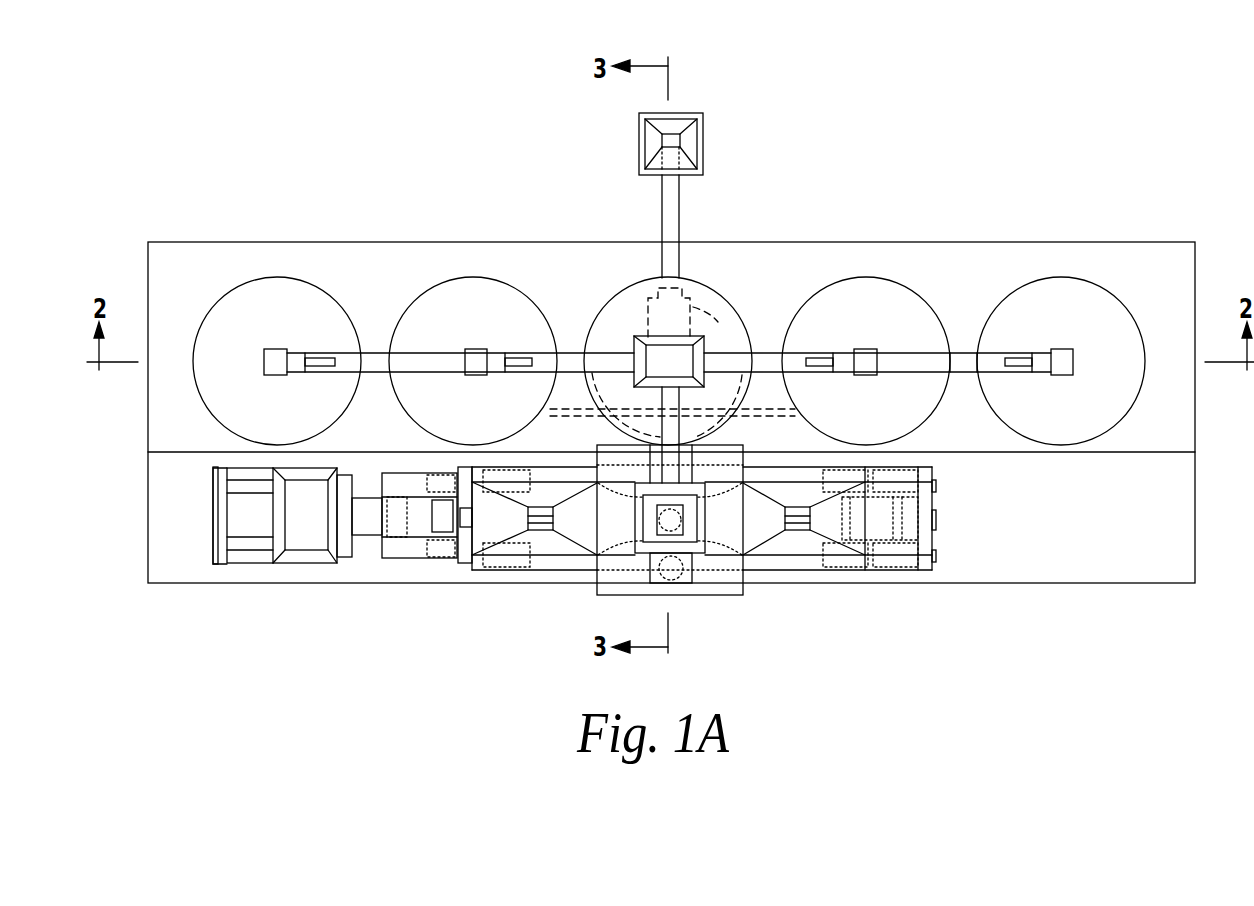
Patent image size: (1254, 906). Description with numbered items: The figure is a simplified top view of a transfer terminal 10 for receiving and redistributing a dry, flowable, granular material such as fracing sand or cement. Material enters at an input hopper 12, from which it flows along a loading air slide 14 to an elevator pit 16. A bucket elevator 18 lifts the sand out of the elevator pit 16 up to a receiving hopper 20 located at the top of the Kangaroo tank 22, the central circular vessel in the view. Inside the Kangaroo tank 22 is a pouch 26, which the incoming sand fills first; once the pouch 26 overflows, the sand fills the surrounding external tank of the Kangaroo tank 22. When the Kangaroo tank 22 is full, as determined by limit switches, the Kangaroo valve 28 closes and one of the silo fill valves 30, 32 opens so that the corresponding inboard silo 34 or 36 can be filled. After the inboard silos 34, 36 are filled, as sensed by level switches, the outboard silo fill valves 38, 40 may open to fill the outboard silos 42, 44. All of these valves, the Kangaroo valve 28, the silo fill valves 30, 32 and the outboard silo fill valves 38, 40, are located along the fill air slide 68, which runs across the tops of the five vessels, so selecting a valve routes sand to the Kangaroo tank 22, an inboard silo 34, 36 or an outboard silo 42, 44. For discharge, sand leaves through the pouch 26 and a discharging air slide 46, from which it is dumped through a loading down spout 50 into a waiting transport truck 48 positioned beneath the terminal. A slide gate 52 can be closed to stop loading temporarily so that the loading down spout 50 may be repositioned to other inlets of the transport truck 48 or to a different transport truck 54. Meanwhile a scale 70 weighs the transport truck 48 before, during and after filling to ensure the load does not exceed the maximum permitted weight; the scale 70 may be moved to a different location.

The transfer terminal 10 is at (1050, 122).
The input hopper 12 is at (704, 135).
The loading air slide 14 is at (680, 228).
The elevator pit 16 is at (692, 321).
The bucket elevator 18 is at (657, 292).
The receiving hopper 20 is at (655, 337).
The Kangaroo tank 22 is at (715, 292).
The pouch 26 is at (592, 394).
The Kangaroo valve 28 is at (683, 374).
The silo fill valve 30 is at (476, 349).
The silo fill valve 32 is at (864, 349).
The inboard silo 34 is at (434, 286).
The inboard silo 36 is at (915, 290).
The outboard silo fill valve 38 is at (277, 349).
The outboard silo fill valve 40 is at (1060, 349).
The outboard silo 42 is at (229, 289).
The outboard silo 44 is at (1112, 292).
The discharging air slide 46 is at (670, 420).
The transport truck 48 is at (935, 542).
The loading down spout 50 is at (652, 598).
The slide gate 52 is at (693, 563).
The transport truck 54 is at (412, 560).
The fill air slide 68 is at (970, 374).
The scale 70 is at (1094, 530).